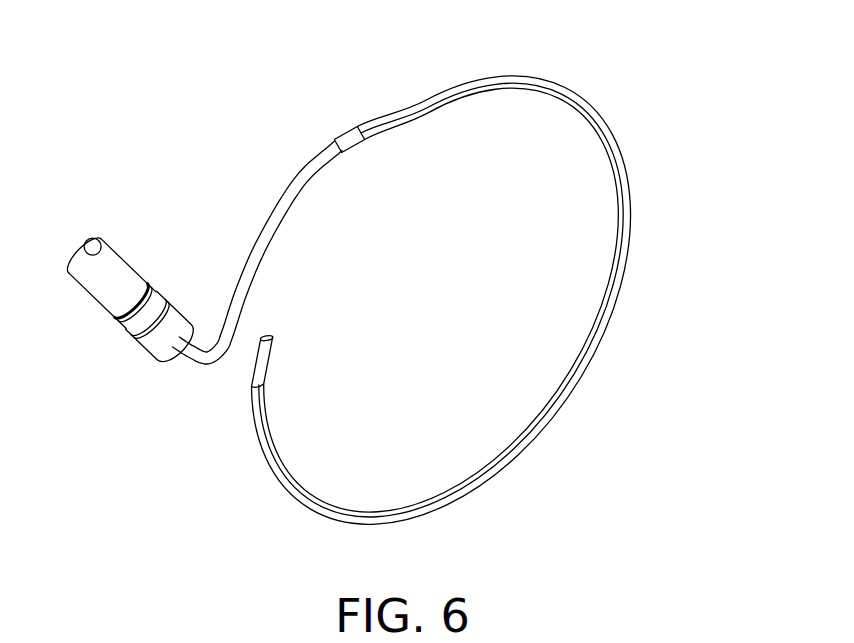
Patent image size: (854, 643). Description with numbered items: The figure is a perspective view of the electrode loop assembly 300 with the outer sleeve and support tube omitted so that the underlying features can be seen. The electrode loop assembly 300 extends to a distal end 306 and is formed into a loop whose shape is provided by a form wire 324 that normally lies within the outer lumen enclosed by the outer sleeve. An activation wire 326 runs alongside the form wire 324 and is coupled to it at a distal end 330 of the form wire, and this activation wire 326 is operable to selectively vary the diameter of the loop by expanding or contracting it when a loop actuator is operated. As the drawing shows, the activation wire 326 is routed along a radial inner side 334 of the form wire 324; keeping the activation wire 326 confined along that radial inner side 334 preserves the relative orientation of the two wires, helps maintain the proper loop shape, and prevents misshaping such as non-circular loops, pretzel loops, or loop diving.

The electrode loop assembly 300 is at (382, 273).
The distal end 306 is at (287, 323).
The form wire 324 is at (583, 377).
The activation wire 326 is at (577, 360).
The distal end of form wire 330 is at (240, 368).
The radial inner side 334 is at (557, 397).